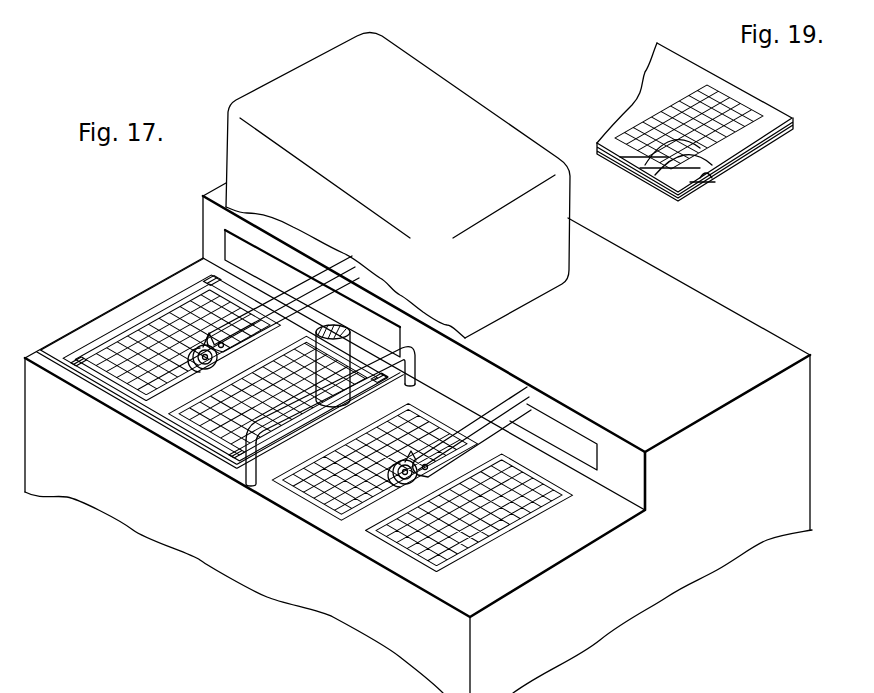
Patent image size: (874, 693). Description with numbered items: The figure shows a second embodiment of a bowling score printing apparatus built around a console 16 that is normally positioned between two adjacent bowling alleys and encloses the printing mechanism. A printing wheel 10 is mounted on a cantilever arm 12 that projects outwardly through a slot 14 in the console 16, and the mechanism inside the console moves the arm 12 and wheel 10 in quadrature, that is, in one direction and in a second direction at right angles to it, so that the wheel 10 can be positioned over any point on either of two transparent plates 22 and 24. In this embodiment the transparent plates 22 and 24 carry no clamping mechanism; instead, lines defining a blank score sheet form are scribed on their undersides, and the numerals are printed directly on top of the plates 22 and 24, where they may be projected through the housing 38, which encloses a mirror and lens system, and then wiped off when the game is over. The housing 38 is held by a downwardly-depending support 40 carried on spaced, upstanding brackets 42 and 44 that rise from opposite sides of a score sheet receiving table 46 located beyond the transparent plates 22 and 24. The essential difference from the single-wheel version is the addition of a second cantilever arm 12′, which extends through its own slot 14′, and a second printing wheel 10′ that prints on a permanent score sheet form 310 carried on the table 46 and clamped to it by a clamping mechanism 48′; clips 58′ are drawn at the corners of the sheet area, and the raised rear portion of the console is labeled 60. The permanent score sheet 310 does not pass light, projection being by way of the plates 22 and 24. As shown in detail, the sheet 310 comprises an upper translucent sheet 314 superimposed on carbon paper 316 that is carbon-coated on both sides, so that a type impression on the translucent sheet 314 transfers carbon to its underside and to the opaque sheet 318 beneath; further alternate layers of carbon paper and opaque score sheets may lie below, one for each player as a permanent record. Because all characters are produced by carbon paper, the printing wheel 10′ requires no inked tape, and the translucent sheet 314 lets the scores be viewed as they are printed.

In FIG. 17, the printing wheel 10 is at (413, 471).
In FIG. 17, the second printing wheel 10' is at (216, 352).
In FIG. 17, the cantilever arm 12 is at (483, 421).
In FIG. 17, the second cantilever arm 12' is at (283, 304).
In FIG. 17, the slot 14 is at (562, 437).
In FIG. 17, the slot 14' is at (312, 282).
In FIG. 17, the console 16 is at (765, 538).
In FIG. 17, the transparent plate 22 is at (325, 500).
In FIG. 17, the transparent plate 24 is at (407, 557).
In FIG. 17, the housing 38 is at (465, 105).
In FIG. 17, the support 40 is at (355, 336).
In FIG. 17, the bracket 42 is at (248, 483).
In FIG. 17, the bracket 44 is at (405, 348).
In FIG. 17, the score sheet receiving table 46 is at (108, 400).
In FIG. 17, the clamping mechanism 48' is at (239, 395).
In FIG. 17, the clip 58' is at (214, 360).
In FIG. 17, the raised housing 60 is at (715, 300).
In FIG. 17, the score sheet form 310 is at (120, 372).
In FIG. 19, the score sheet form 310 is at (683, 67).
In FIG. 19, the upper translucent sheet 314 is at (653, 160).
In FIG. 19, the carbon paper 316 is at (673, 153).
In FIG. 19, the opaque sheet 318 is at (707, 185).